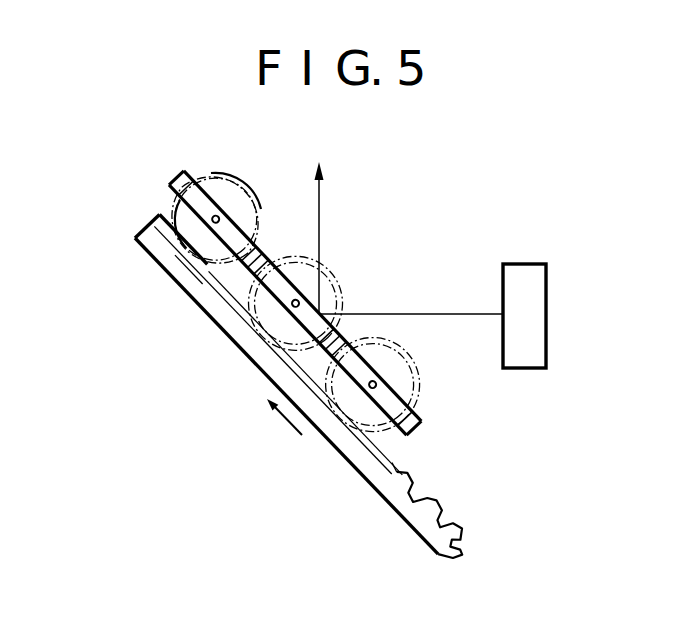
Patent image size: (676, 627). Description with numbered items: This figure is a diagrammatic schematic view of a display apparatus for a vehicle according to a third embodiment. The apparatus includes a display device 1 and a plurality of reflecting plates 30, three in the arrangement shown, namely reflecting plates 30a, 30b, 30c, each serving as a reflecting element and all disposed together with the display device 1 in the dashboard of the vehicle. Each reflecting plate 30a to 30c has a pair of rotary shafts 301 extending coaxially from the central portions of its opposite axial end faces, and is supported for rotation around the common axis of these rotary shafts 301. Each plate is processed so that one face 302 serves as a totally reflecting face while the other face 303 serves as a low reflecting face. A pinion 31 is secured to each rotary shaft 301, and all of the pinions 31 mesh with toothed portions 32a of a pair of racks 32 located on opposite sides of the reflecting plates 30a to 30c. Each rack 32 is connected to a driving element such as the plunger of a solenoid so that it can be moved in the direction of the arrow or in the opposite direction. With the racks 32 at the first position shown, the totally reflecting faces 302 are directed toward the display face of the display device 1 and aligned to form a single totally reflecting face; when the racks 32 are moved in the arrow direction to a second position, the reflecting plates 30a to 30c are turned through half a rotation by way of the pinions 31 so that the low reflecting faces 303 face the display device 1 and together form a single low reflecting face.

The display device 1 is at (528, 340).
The reflecting plates 30 is at (176, 178).
The reflecting plate 30a is at (209, 193).
The reflecting plate 30b is at (277, 257).
The reflecting plate 30c is at (420, 413).
The rotary shafts 301 is at (192, 281).
The totally reflecting face 302 is at (250, 202).
The low reflecting face 303 is at (177, 207).
The pinion 31 is at (160, 262).
The racks 32 is at (347, 459).
The toothed portions 32a is at (213, 314).